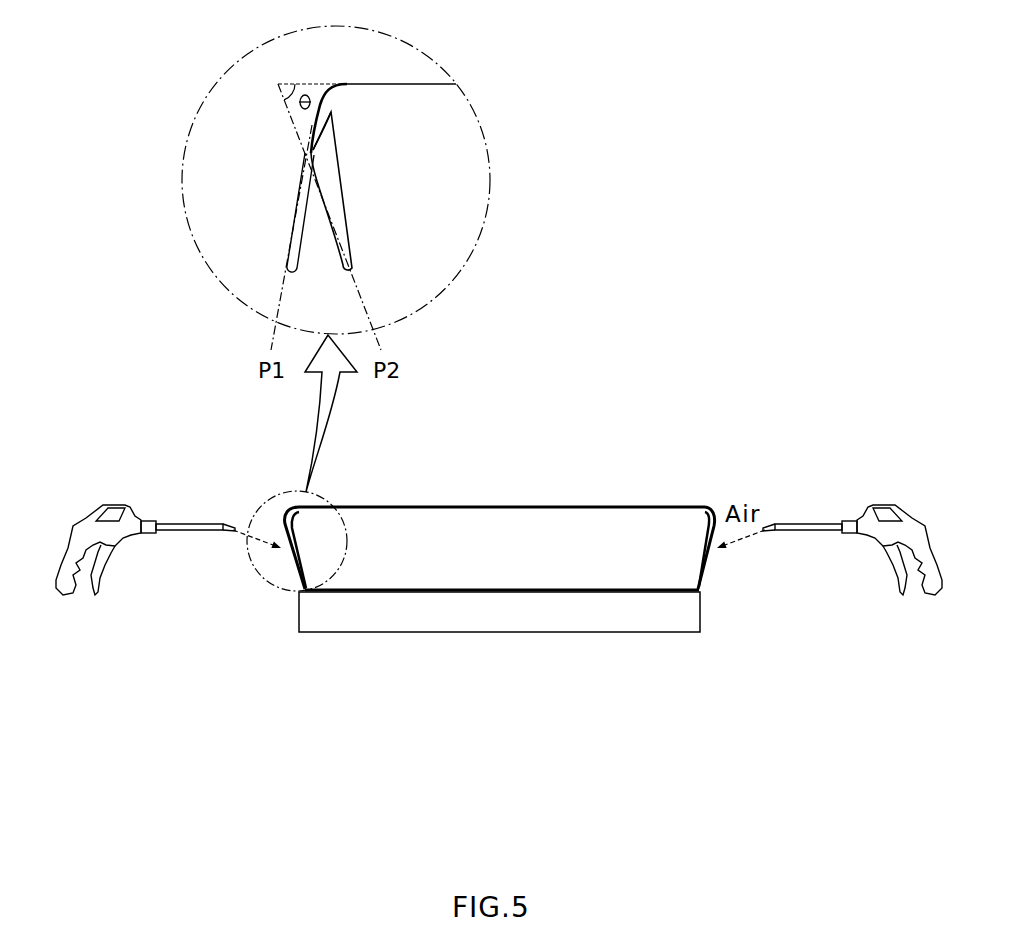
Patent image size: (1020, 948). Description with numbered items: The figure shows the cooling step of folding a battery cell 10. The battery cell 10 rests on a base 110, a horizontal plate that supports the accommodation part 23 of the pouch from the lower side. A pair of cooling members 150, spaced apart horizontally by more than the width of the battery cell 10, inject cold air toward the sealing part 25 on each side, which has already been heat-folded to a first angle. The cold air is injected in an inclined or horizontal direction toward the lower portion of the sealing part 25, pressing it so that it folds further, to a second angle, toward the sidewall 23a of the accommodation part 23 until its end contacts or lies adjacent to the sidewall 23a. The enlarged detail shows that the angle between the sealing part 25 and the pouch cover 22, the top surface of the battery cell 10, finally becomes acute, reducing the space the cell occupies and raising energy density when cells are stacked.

The battery cell 10 is at (507, 557).
The pouch cover 22 is at (414, 82).
The accommodation part 23 is at (593, 577).
The sidewall 23a is at (344, 187).
The sealing part 25 is at (347, 237).
The base 110 is at (498, 633).
The cooling member 150 is at (878, 493).